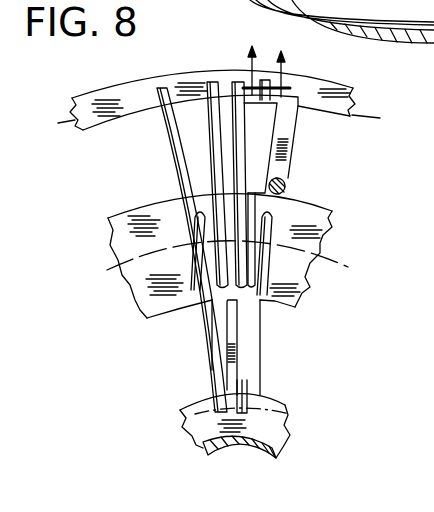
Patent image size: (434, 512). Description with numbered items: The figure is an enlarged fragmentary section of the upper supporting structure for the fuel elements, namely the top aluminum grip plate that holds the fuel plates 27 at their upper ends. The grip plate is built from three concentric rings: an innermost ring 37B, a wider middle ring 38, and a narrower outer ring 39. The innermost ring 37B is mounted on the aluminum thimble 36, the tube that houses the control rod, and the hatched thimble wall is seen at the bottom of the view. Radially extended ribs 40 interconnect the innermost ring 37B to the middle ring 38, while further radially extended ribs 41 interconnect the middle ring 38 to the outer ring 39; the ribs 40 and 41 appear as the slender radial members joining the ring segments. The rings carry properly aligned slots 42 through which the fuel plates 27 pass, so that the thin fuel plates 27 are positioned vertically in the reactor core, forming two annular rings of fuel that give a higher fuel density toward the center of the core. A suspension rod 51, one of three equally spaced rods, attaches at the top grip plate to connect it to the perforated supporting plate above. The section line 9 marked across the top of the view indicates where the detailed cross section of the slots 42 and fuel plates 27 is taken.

The section line 9- 9 is at (269, 70).
The fuel plates 27 is at (209, 131).
The aluminum thimble 36 is at (222, 452).
The innermost ring 37B is at (273, 407).
The middle ring 38 is at (318, 221).
The outer ring 39 is at (340, 114).
The radially extended ribs 40 is at (235, 367).
The radially extended ribs 41 is at (283, 127).
The slots 42 is at (265, 97).
The suspension rods 51 is at (285, 185).